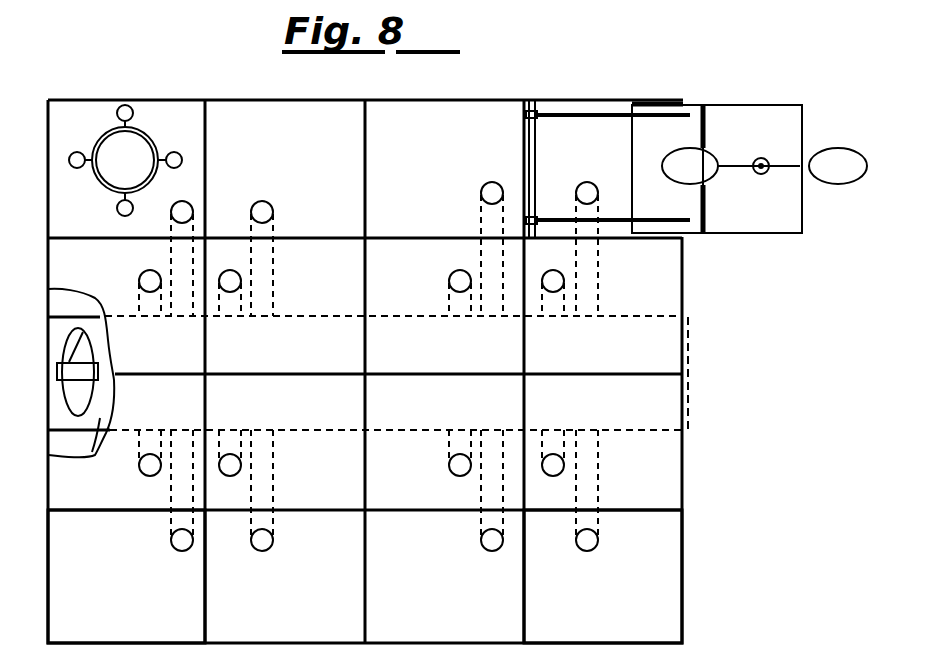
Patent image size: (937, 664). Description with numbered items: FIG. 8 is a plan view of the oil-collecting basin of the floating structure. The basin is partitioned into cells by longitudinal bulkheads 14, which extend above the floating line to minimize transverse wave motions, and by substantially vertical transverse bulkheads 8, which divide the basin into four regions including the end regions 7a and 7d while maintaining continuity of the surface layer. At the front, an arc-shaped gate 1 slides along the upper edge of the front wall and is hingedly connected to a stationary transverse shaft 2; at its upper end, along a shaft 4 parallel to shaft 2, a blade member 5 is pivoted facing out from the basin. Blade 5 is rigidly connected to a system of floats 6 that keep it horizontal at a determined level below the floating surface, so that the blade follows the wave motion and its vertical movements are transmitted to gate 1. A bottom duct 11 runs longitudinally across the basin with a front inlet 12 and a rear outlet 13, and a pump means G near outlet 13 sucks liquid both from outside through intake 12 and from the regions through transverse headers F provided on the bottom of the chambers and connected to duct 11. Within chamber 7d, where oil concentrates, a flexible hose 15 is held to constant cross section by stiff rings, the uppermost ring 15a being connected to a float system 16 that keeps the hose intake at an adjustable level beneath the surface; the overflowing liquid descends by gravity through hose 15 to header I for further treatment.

The arc-shaped gate 1 is at (655, 130).
The stationary transverse shaft 2 is at (538, 132).
The shaft 4 is at (704, 237).
The blade member 5 is at (745, 115).
The floats 6 is at (764, 180).
The region of basin 7a is at (620, 613).
The region of basin 7d is at (138, 595).
The transverse bulkheads 8 is at (207, 591).
The bottom duct 11 is at (48, 464).
The front inlet 12 is at (689, 352).
The rear outlet 13 is at (48, 346).
The longitudinal bulkheads 14 is at (408, 236).
The flexible hose 15 is at (137, 133).
The ring 15a is at (110, 140).
The float system 16 is at (180, 152).
The transverse headers F is at (271, 202).
The pump means G is at (70, 396).
The header I is at (108, 172).